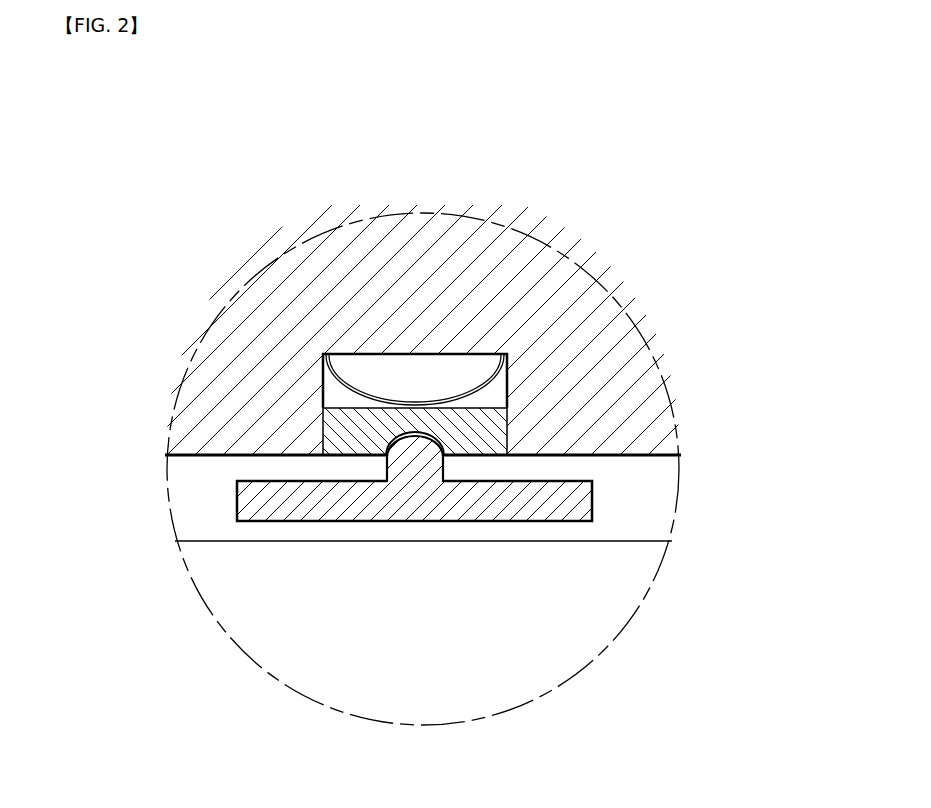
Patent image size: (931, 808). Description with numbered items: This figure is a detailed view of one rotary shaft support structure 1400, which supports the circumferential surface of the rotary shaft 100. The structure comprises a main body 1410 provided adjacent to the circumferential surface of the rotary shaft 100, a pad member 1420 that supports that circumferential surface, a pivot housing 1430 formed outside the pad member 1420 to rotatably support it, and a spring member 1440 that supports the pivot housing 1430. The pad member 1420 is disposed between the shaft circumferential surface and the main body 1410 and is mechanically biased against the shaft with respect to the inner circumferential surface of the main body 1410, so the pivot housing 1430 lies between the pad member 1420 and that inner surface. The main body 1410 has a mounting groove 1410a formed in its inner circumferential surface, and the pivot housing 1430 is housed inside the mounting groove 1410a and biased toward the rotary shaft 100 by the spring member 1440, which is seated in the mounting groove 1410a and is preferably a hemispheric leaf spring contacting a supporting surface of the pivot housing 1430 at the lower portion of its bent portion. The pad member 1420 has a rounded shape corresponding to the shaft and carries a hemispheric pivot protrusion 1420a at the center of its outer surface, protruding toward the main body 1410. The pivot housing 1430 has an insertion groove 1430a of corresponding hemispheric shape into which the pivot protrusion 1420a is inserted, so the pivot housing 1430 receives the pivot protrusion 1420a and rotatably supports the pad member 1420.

The rotary shaft 100 is at (533, 630).
The rotary shaft support structure 1400 is at (750, 250).
The main body 1410 is at (563, 303).
The mounting groove 1410a is at (300, 390).
The pad member 1420 is at (235, 500).
The pivot protrusion 1420a is at (428, 478).
The pivot housing 1430 is at (335, 425).
The insertion groove 1430a is at (440, 440).
The spring member 1440 is at (483, 378).